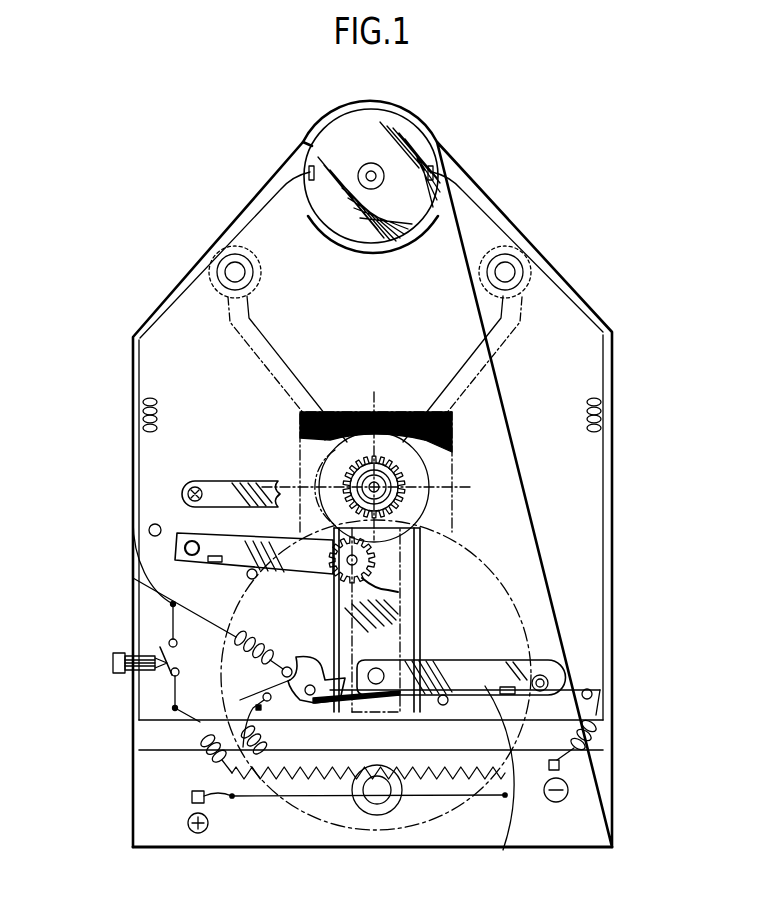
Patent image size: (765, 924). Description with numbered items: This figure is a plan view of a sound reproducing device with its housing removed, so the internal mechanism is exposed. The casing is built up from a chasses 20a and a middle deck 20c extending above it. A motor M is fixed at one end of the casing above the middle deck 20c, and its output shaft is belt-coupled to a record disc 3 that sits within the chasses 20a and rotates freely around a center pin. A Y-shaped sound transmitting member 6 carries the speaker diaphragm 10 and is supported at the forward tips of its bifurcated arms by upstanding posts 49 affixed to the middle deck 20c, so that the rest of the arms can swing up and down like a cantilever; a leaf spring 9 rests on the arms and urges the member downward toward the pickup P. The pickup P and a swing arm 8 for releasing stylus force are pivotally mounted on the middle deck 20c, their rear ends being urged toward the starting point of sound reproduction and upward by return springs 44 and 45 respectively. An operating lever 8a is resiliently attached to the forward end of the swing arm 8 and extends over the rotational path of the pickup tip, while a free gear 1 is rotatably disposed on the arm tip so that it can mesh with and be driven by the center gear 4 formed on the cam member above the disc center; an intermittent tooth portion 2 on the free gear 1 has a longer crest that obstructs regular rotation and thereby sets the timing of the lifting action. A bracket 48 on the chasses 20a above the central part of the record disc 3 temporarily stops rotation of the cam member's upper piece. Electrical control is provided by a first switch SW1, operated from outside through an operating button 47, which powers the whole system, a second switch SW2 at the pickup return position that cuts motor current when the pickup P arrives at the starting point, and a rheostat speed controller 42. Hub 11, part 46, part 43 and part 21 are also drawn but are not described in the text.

The motor M is at (412, 132).
The upstanding posts 49 is at (229, 267).
The chasses 20a is at (613, 333).
The middle deck 20c is at (553, 308).
The bracket 48 is at (370, 422).
The center gear 4 is at (400, 503).
The gear hub 11 is at (405, 528).
The free gear 1 is at (395, 552).
The intermittent tooth portion 2 is at (330, 553).
The sound transmitting member 6 is at (405, 571).
The operating lever 8a is at (405, 600).
The record disc 3 is at (412, 640).
The leaf spring 9 is at (236, 482).
The swing arm 8 is at (176, 562).
The return spring 45 is at (184, 550).
The operating button 47 is at (112, 660).
The first switch SW1 is at (160, 668).
The latch 46 is at (283, 700).
The second switch SW2 is at (285, 705).
The return spring 44 is at (577, 686).
The battery compartment 43 is at (613, 782).
The latch rod 21 is at (333, 697).
The speaker diaphragm 10 is at (395, 828).
The speed controller 42 is at (430, 797).
The pickup P is at (499, 783).